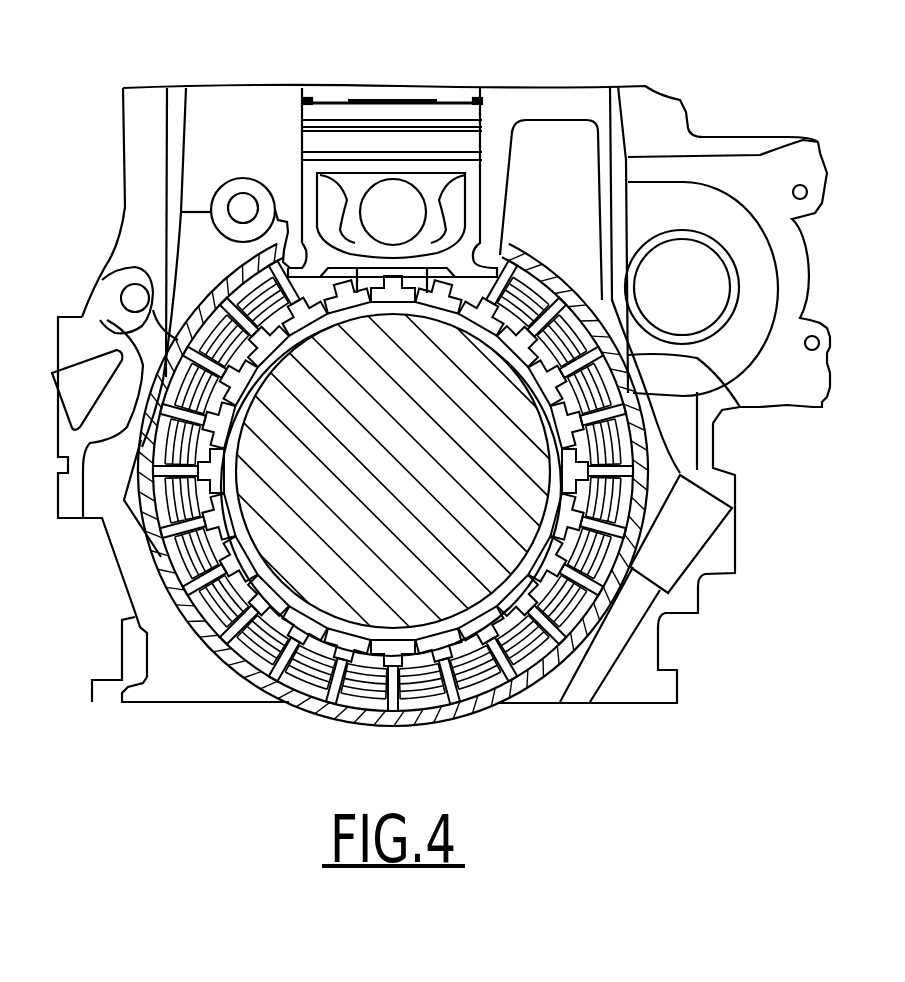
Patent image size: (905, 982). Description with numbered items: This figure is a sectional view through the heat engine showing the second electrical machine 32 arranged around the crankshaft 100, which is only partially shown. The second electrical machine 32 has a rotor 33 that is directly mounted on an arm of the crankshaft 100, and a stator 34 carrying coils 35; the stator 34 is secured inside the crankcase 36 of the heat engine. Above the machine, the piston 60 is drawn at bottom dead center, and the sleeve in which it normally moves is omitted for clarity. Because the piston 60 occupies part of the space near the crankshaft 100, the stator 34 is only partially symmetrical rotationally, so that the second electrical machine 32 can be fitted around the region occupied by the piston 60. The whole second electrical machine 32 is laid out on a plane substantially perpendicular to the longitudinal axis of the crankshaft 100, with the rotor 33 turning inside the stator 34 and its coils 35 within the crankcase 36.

The second electrical machine 32 is at (139, 581).
The rotor 33 is at (92, 315).
The stator 34 is at (228, 283).
The coils 35 is at (165, 443).
The crankcase 36 is at (542, 160).
The piston 60 is at (382, 142).
The crankshaft 100 is at (365, 572).